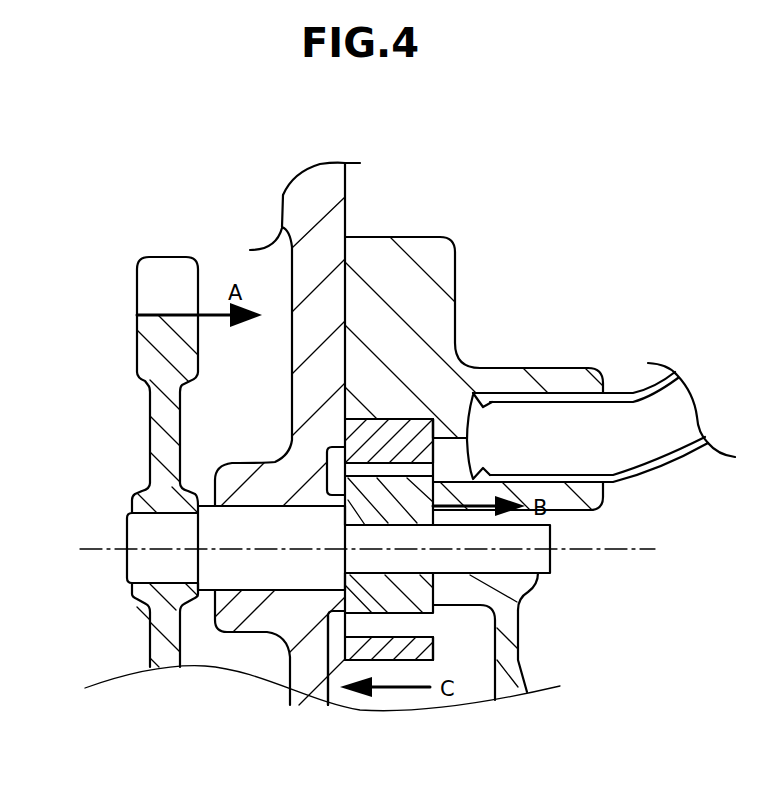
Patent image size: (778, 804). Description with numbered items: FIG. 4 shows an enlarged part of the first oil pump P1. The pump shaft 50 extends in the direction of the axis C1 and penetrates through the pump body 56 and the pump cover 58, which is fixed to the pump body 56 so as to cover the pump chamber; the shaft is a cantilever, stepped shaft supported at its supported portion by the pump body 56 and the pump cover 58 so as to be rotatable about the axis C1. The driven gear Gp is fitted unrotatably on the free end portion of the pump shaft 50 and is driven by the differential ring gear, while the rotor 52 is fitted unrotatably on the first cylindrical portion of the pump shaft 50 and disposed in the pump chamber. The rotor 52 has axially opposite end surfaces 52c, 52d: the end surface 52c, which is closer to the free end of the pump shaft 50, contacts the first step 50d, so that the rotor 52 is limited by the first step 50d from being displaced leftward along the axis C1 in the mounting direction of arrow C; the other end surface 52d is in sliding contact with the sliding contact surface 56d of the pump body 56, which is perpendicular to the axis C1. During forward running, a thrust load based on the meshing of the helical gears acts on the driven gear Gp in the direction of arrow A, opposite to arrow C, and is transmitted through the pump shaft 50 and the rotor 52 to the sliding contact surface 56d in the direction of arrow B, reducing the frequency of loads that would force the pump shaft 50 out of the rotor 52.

The pump shaft 50 is at (122, 523).
The first step 50d is at (345, 592).
The rotor 52 is at (462, 635).
The end surface 52c is at (328, 636).
The end surface 52d is at (433, 632).
The pump body 56 is at (396, 226).
The sliding contact surface 56d is at (430, 515).
The pump cover 58 is at (283, 192).
The driven gear Gp is at (143, 353).
The first oil pump P1 is at (540, 243).
The axis C1 is at (649, 549).